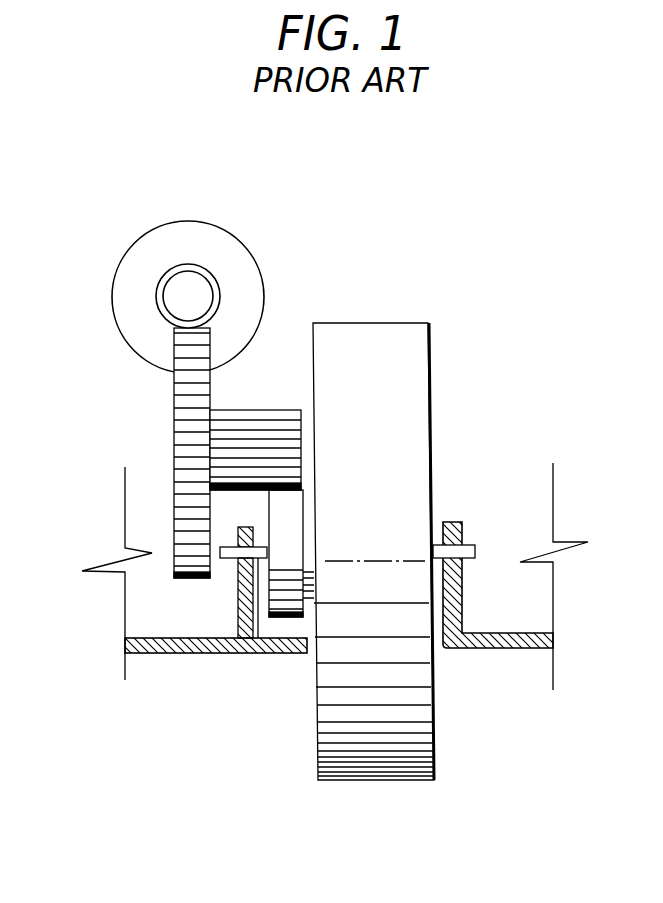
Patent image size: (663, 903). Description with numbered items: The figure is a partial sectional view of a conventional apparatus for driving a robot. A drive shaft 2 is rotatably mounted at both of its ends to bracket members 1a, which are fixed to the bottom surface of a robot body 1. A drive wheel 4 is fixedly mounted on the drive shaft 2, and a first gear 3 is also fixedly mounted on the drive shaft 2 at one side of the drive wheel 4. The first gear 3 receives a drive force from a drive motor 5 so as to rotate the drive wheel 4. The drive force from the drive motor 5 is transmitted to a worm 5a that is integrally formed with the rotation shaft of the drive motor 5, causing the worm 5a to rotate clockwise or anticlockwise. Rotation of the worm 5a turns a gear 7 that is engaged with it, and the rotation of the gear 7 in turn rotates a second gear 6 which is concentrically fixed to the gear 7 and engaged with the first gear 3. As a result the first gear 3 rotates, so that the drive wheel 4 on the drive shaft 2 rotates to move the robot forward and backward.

The robot body 1 is at (498, 650).
The bracket members 1a is at (242, 587).
The drive shaft 2 is at (478, 544).
The first gear 3 is at (283, 618).
The drive wheel 4 is at (378, 780).
The drive motor 5 is at (166, 225).
The worm 5a is at (160, 306).
The second gear 6 is at (273, 413).
The gear 7 is at (183, 465).